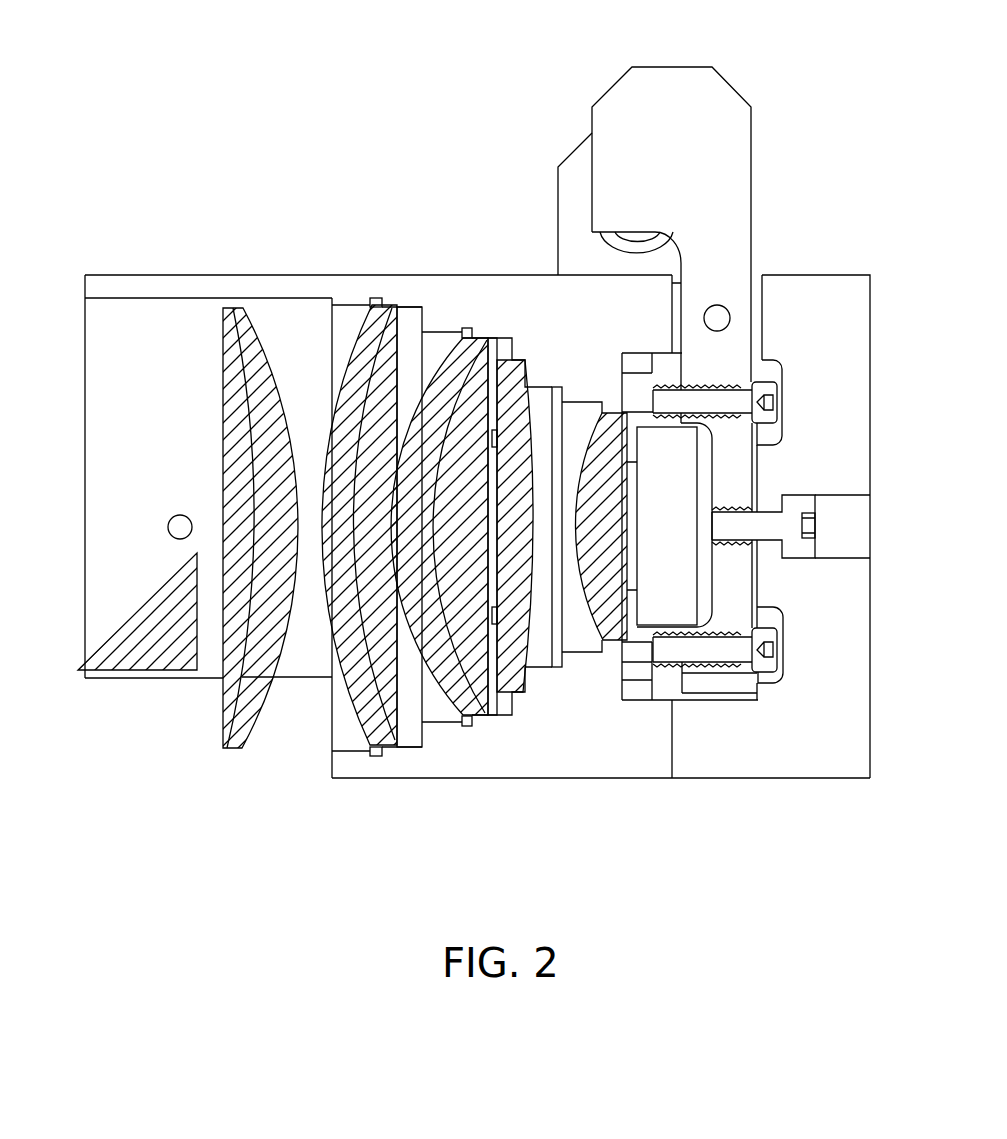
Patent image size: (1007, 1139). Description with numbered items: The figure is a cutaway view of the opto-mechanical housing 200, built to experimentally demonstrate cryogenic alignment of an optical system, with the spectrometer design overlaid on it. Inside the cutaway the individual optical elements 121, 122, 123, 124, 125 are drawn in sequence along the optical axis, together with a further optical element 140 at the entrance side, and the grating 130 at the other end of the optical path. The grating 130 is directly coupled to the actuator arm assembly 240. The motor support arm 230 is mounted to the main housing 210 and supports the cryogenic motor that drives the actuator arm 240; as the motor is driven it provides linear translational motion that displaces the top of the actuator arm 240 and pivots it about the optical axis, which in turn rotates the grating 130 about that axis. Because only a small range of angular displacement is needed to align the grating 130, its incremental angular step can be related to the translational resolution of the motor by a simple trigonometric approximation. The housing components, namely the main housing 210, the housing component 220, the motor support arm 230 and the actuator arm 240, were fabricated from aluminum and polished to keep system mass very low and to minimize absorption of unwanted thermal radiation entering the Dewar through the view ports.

The opto-mechanical housing 200 is at (155, 68).
The main housing 210 is at (487, 295).
The opto-mechanical housing component 220 is at (823, 293).
The motor support arm 230 is at (578, 163).
The actuator arm assembly 240 is at (668, 87).
The grating 130 is at (677, 510).
The optical element 140 is at (140, 655).
The optical element 121 is at (233, 735).
The optical element 122 is at (385, 733).
The optical element 123 is at (473, 702).
The optical element 124 is at (512, 675).
The optical element 125 is at (616, 628).